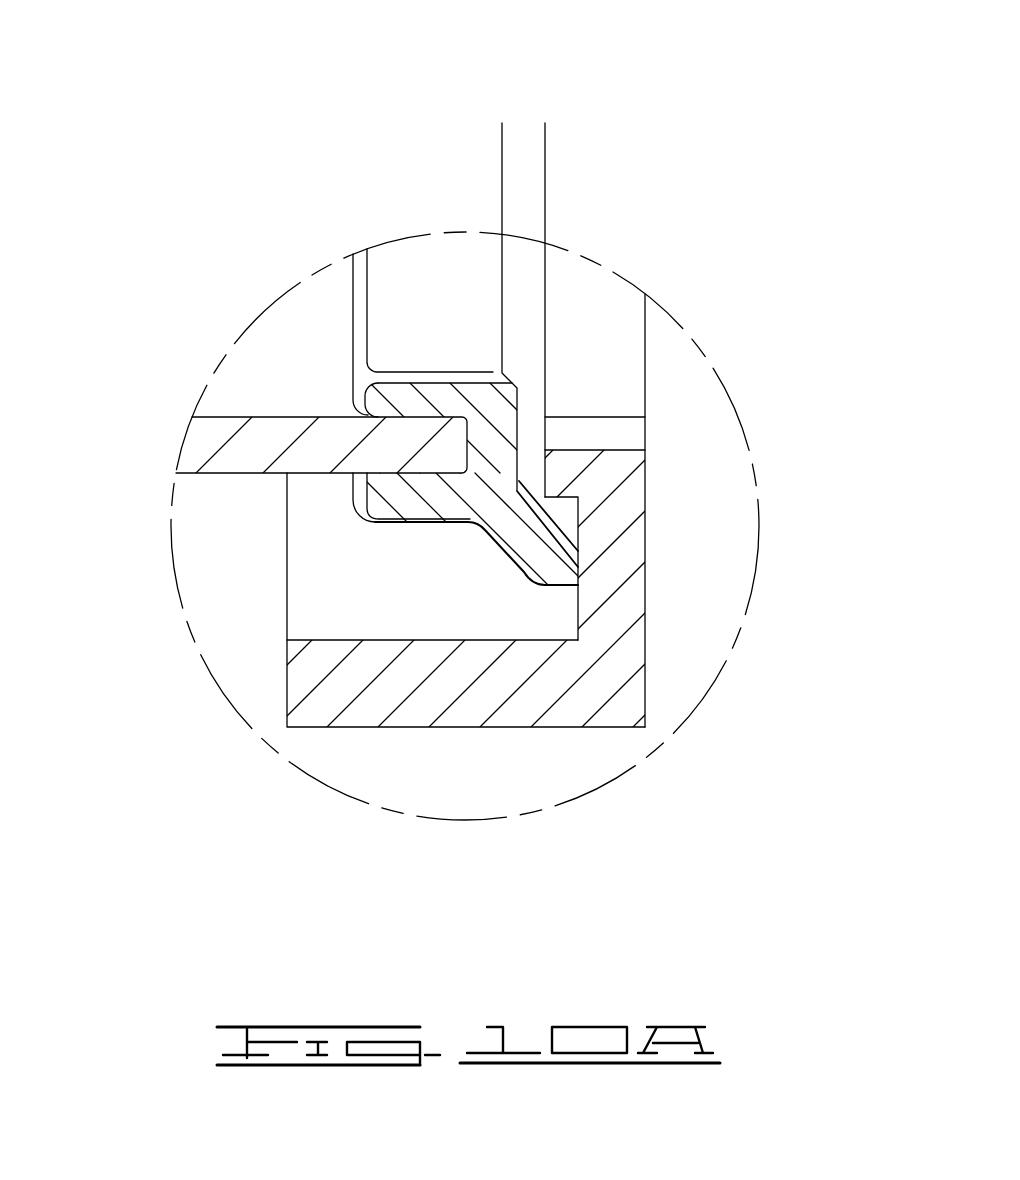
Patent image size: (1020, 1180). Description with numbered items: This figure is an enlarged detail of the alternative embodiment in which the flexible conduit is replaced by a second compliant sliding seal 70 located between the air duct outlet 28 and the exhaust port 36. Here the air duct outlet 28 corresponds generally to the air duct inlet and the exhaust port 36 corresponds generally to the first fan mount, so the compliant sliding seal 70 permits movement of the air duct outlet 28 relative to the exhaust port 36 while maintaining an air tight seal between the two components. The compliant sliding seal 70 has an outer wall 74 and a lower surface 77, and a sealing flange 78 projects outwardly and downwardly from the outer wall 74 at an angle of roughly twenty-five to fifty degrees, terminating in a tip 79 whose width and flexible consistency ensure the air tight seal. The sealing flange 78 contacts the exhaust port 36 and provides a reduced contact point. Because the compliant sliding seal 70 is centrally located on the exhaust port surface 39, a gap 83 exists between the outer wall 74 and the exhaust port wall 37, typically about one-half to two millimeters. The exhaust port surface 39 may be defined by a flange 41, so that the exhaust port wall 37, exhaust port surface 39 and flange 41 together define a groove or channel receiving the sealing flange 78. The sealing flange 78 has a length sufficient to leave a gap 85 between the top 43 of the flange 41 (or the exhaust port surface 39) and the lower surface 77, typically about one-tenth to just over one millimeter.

The air duct outlet 28 is at (240, 417).
The exhaust port 36 is at (313, 725).
The exhaust port wall 37 is at (370, 640).
The exhaust port surface 39 is at (578, 612).
The flange 41 is at (583, 463).
The top of flange 43 is at (544, 413).
The compliant sliding seal 70 is at (356, 492).
The outer wall 74 is at (436, 641).
The sealing flange 78 is at (548, 588).
The lower surface 77 is at (518, 402).
The tip 79 is at (580, 577).
The gap 83 is at (597, 587).
The gap 85 is at (420, 139).